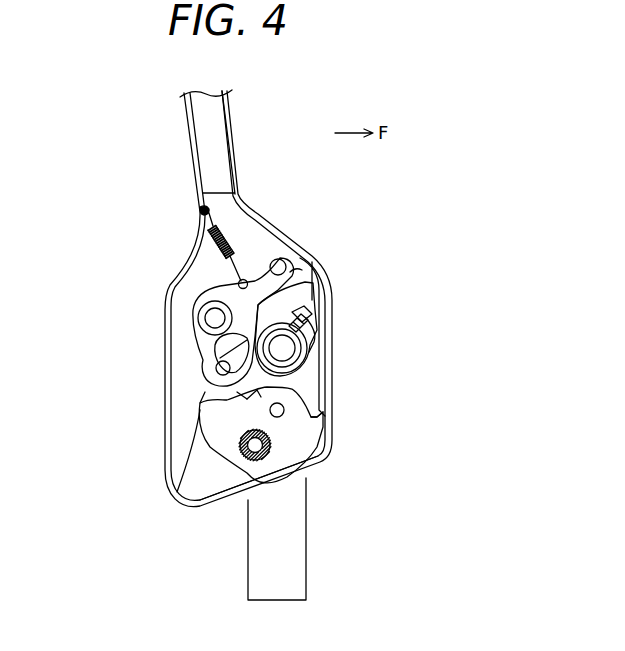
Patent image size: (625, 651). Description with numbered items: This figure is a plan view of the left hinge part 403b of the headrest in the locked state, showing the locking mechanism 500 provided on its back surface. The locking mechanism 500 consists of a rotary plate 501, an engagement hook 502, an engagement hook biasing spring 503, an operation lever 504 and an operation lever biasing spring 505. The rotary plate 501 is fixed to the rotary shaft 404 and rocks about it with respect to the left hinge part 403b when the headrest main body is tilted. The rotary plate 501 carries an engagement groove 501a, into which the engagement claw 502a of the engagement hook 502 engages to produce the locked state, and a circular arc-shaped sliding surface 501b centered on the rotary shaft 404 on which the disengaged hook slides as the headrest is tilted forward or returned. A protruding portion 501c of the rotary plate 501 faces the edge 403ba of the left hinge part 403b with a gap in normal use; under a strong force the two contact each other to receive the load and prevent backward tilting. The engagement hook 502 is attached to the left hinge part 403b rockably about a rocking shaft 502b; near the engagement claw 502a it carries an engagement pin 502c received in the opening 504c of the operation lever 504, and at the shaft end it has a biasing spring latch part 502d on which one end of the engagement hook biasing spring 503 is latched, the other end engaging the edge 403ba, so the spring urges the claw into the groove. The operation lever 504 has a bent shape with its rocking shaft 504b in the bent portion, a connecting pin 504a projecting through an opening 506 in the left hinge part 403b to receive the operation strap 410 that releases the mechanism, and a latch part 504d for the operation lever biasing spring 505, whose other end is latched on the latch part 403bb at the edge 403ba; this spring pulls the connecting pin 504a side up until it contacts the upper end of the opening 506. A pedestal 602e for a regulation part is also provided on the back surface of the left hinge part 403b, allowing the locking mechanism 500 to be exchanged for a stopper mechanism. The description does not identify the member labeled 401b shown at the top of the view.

The arm 401b is at (220, 124).
The left hinge part 403b is at (337, 233).
The edge 403ba is at (320, 445).
The latch part 403bb is at (199, 207).
The rotary shaft 404 is at (292, 484).
The operation strap 410 is at (307, 553).
The locking mechanism 500 is at (186, 425).
The rotary plate 501 is at (217, 473).
The engagement groove 501a is at (270, 447).
The sliding surface 501b is at (286, 407).
The protruding portion 501c is at (312, 421).
The engagement hook 502 is at (298, 384).
The engagement claw 502a is at (222, 440).
The rocking shaft 502b is at (304, 331).
The engagement pin 502c is at (214, 377).
The biasing spring latch part 502d is at (302, 300).
The engagement hook biasing spring 503 is at (303, 316).
The operation lever 504 is at (205, 336).
The connecting pin 504a is at (278, 262).
The rocking shaft 504b is at (198, 316).
The opening 504c is at (218, 360).
The latch part 504d is at (238, 286).
The operation lever biasing spring 505 is at (208, 240).
The opening 506 is at (300, 264).
The pedestal 602e is at (247, 401).